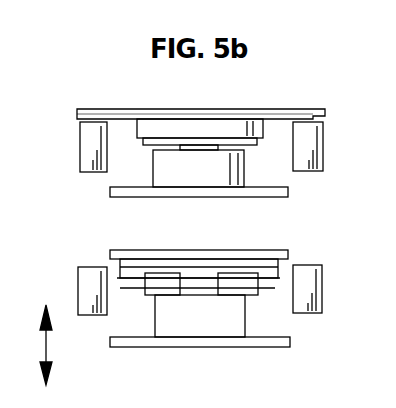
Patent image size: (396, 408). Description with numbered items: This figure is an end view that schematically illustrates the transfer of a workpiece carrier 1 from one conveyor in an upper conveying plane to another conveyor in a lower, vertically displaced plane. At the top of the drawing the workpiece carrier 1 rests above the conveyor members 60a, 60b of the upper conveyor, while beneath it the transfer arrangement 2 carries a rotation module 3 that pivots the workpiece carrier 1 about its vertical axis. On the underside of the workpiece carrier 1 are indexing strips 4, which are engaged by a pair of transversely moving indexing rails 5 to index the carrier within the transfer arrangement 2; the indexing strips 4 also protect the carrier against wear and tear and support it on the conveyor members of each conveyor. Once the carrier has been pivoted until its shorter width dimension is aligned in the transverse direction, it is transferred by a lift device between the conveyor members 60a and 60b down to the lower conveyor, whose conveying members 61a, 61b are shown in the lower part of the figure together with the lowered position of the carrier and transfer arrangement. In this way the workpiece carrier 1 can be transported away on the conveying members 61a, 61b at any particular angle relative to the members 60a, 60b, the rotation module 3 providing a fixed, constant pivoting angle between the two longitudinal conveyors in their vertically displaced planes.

The workpiece carrier 1 is at (109, 113).
The transfer arrangement 2 is at (134, 197).
The rotation module 3 is at (223, 165).
The indexing strips 4 is at (160, 118).
The indexing rails 5 is at (212, 127).
The conveyor member 60a is at (305, 146).
The conveyor member 60b is at (89, 155).
The conveying member 61a is at (303, 290).
The conveying member 61b is at (86, 281).